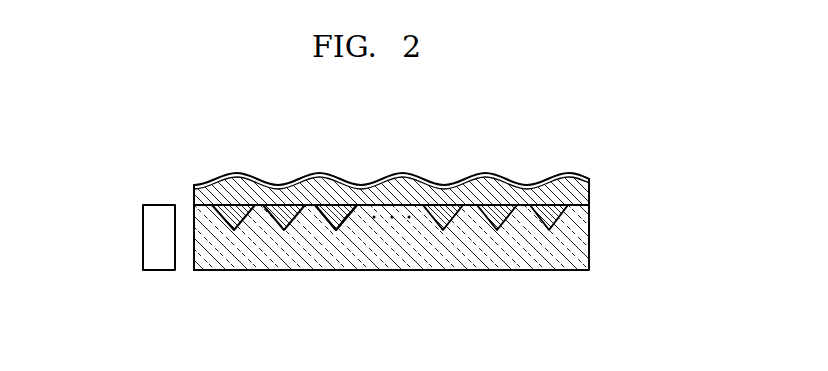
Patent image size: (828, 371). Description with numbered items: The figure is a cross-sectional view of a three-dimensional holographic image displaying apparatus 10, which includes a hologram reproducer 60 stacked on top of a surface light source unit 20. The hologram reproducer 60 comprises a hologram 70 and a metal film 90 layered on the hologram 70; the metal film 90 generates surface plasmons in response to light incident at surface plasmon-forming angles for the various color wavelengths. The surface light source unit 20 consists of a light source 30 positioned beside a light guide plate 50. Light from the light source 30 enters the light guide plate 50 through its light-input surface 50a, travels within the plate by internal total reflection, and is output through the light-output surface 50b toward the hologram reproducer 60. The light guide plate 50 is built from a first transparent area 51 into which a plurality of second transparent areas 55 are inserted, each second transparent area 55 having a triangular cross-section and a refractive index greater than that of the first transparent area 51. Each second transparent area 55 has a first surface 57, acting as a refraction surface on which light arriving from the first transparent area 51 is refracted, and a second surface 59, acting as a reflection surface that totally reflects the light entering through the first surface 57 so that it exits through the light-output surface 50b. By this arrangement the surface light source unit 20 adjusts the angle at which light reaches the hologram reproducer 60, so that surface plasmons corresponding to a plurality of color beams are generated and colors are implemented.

The 3D holographic image displaying apparatus 10 is at (178, 130).
The surface light source unit 20 is at (237, 332).
The light source 30 is at (158, 271).
The light guide plate 50 is at (227, 271).
The light-input surface 50a is at (193, 219).
The light-output surface 50b is at (395, 203).
The first transparent area 51 is at (293, 262).
The second transparent area 55 is at (340, 207).
The first surface 57 is at (336, 224).
The second surface 59 is at (341, 224).
The hologram reproducer 60 is at (632, 165).
The hologram 70 is at (582, 193).
The metal film 90 is at (583, 176).